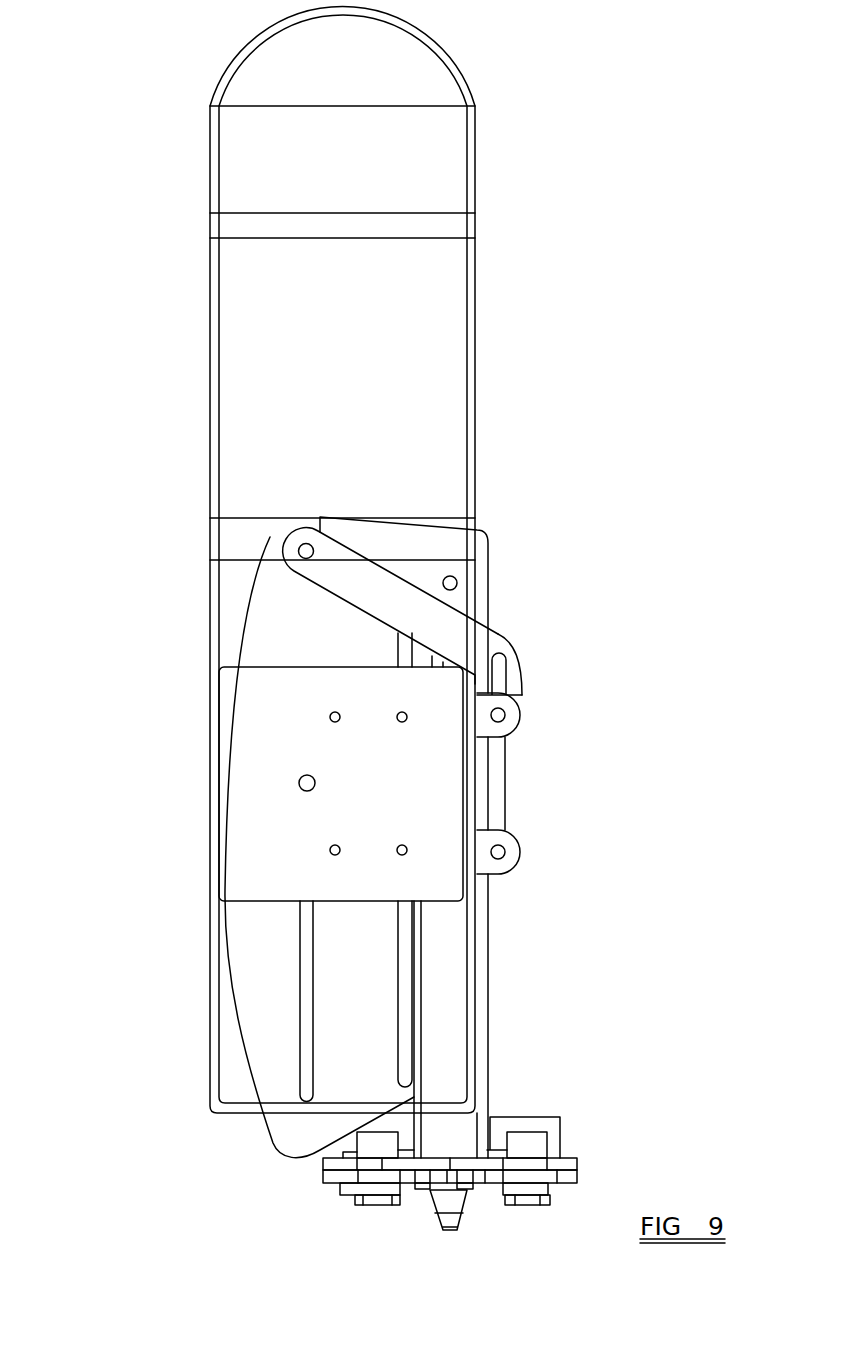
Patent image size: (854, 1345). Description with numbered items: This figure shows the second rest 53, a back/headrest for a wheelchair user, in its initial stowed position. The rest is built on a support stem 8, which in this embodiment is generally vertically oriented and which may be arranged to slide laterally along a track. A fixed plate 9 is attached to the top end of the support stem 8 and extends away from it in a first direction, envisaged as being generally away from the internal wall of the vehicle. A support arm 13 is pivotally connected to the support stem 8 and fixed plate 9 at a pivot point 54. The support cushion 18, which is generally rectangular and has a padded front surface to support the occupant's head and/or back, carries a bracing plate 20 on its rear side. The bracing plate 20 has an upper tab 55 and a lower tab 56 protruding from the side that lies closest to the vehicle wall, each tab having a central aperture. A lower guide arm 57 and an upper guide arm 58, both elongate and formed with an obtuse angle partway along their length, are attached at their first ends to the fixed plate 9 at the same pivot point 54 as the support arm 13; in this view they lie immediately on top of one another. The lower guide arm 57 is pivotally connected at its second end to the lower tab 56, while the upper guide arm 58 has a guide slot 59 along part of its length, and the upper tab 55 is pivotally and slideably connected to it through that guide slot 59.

The second rest 53 is at (146, 104).
The support cushion 18 is at (440, 181).
The fixed plate 9 is at (405, 553).
The pivot point 54 is at (298, 548).
The lower guide arm 57 is at (482, 650).
The upper guide arm 58 is at (404, 837).
The upper tab 55 is at (512, 716).
The guide slot 59 is at (507, 780).
The lower tab 56 is at (502, 857).
The bracing plate 20 is at (250, 845).
The support arm 13 is at (273, 1145).
The support stem 8 is at (453, 1138).